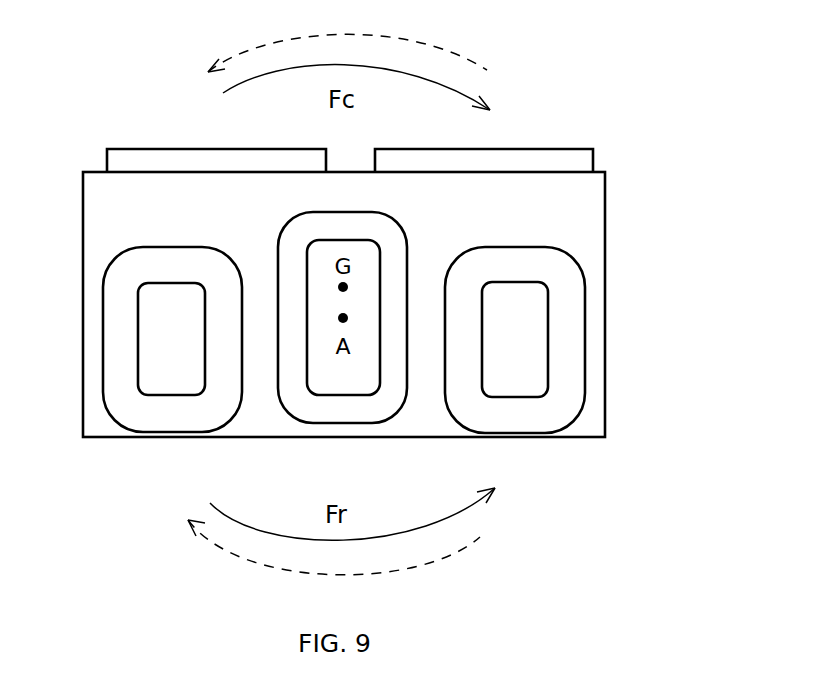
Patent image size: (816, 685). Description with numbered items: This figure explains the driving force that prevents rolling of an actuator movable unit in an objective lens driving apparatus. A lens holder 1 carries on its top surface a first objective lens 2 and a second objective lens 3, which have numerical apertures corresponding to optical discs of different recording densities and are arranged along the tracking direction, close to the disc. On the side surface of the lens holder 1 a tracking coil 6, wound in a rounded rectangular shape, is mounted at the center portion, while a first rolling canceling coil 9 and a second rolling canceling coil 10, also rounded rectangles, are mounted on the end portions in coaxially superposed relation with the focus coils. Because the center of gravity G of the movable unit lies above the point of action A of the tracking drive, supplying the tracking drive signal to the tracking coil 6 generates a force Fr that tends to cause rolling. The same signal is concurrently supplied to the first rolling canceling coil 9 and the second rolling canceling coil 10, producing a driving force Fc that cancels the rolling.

The lens holder 1 is at (578, 205).
The first objective lens 2 is at (537, 148).
The second objective lens 3 is at (172, 148).
The tracking coil 6 is at (369, 410).
The first rolling canceling coil 9 is at (573, 338).
The second rolling canceling coil 10 is at (120, 333).